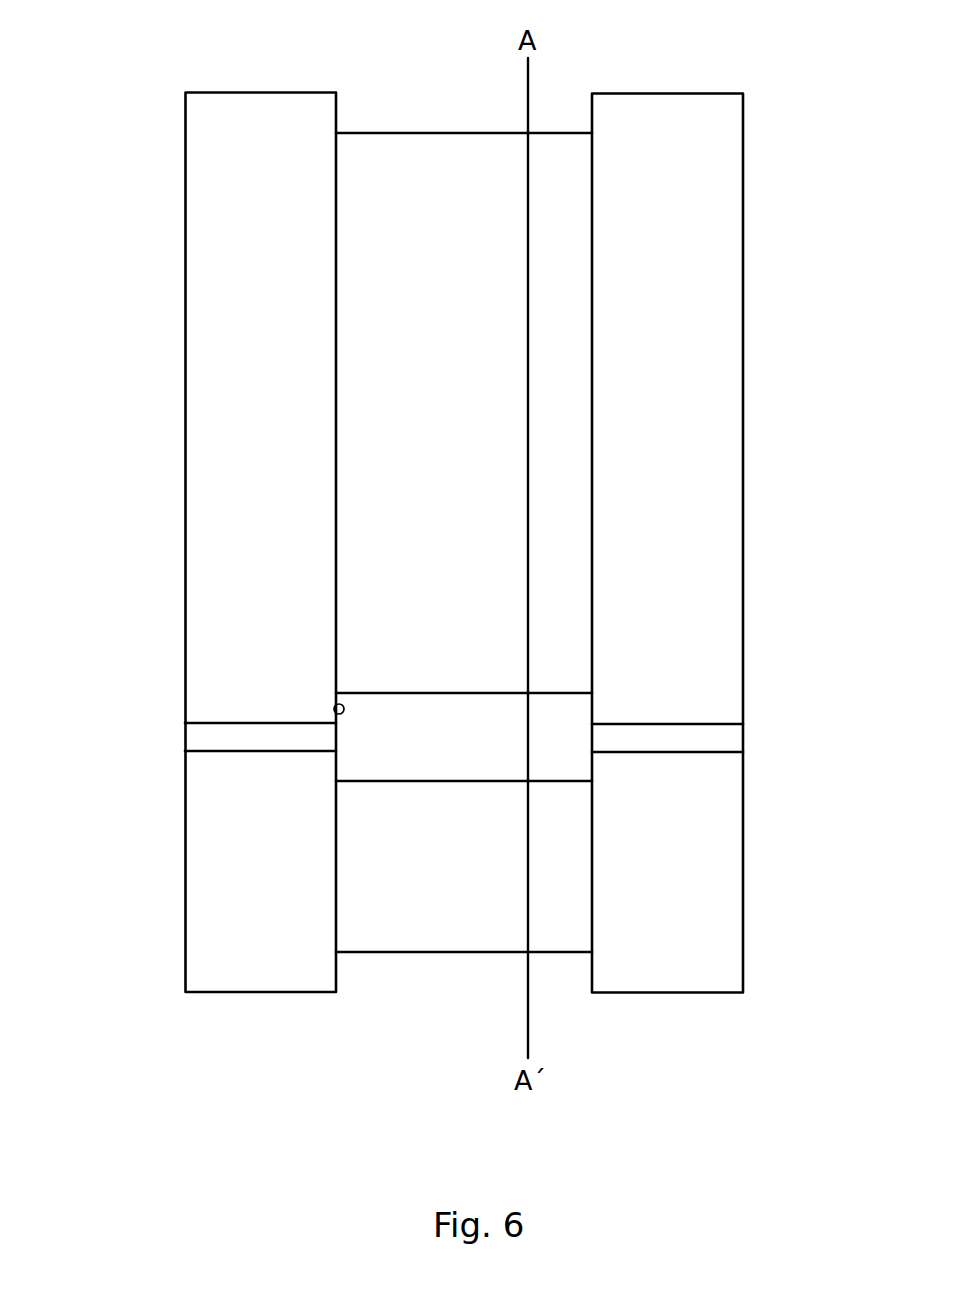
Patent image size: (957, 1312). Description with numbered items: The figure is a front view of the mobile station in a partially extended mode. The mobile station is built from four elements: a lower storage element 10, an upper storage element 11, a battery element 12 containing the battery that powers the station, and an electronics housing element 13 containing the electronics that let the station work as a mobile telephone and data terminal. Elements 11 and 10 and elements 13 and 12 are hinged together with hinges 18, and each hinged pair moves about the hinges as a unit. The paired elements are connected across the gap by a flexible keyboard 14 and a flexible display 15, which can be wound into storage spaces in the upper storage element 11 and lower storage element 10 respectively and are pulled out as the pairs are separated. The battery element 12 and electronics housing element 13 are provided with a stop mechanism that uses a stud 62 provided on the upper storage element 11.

The lower storage element 10 is at (209, 602).
The upper storage element 11 is at (210, 367).
The battery element 12 is at (727, 604).
The electronics housing element 13 is at (745, 272).
The flexible keyboard 14 is at (457, 953).
The flexible display 15 is at (374, 130).
The hinges 18 is at (185, 733).
The stud 62 is at (334, 706).